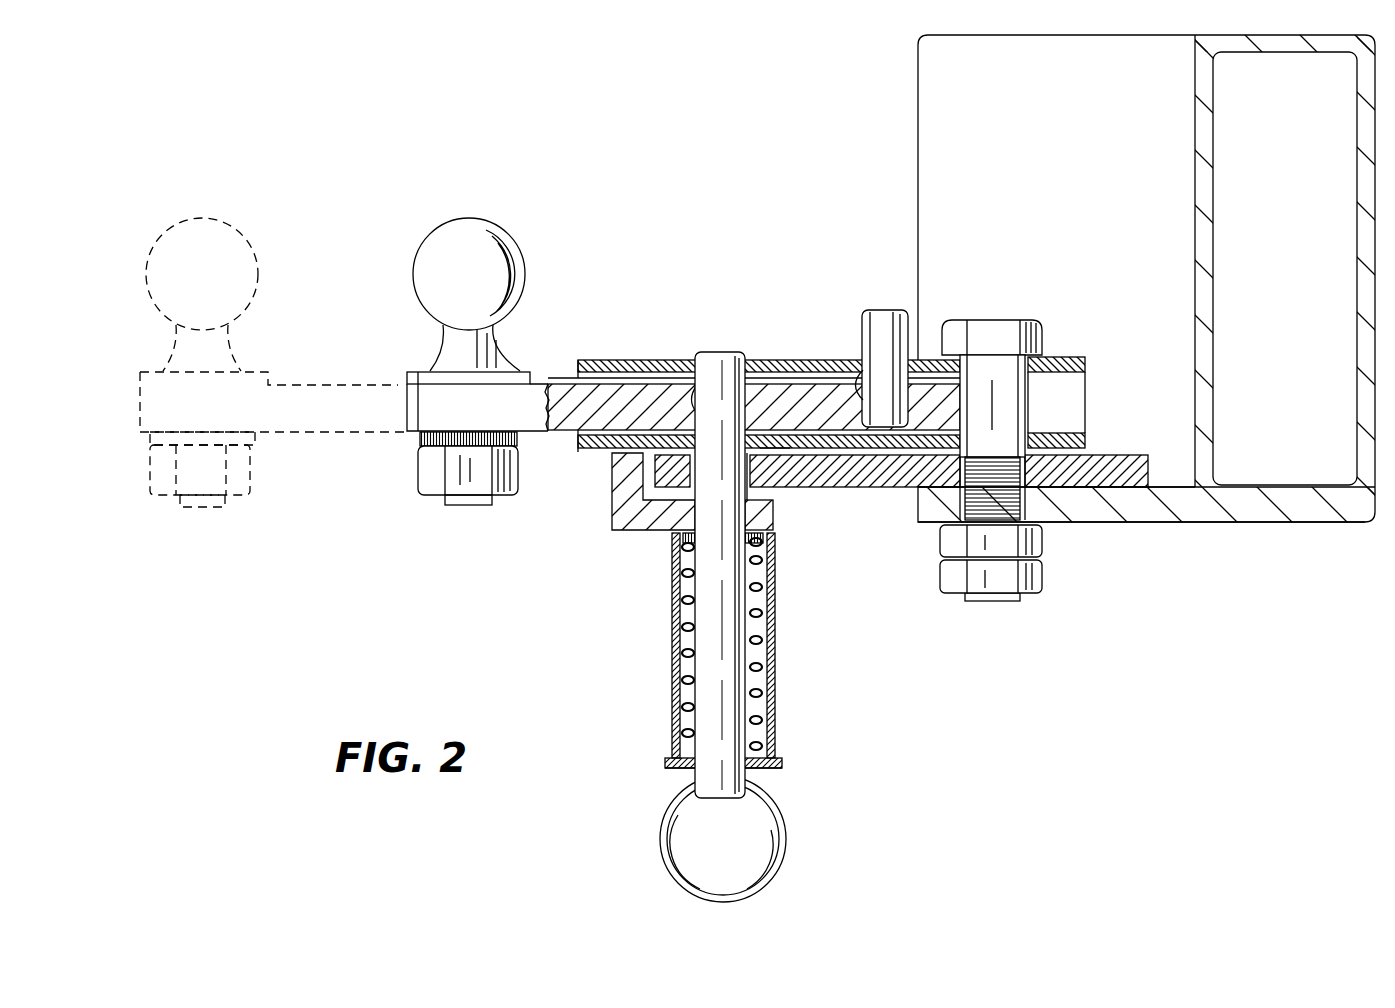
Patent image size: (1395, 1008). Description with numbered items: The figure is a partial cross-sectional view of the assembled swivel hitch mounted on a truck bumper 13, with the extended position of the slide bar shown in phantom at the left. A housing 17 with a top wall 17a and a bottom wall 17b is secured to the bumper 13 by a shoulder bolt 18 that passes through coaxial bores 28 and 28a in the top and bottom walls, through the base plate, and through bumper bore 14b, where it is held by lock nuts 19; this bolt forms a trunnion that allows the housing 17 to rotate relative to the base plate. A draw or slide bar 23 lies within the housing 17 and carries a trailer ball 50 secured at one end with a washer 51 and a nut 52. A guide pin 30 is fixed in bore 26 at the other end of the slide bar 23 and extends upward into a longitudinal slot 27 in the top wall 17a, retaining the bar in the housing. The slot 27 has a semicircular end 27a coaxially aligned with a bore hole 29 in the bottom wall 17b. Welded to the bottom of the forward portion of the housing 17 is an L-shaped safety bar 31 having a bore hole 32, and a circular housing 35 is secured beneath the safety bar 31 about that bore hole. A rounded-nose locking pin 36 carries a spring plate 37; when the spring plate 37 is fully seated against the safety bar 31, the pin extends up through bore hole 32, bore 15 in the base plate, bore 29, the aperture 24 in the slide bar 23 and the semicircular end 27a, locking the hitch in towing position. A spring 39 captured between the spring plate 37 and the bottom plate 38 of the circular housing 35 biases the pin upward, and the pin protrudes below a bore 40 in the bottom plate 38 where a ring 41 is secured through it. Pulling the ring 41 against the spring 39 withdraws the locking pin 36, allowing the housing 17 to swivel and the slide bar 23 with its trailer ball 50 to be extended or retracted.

The truck bumper 13 is at (1325, 512).
The bumper bore 14b is at (1015, 508).
The bore 15 is at (752, 490).
The housing 17 is at (612, 358).
The top wall 17a is at (580, 360).
The bottom wall 17b is at (578, 452).
The shoulder bolt 18 is at (992, 330).
The lock nuts 19 is at (1040, 578).
The slide bar 23 is at (546, 380).
The aperture 24 is at (700, 398).
The bore 26 is at (873, 380).
The longitudinal slot 27 is at (788, 365).
The semicircular end 27a is at (699, 368).
The bore 28 is at (1032, 372).
The bore 28a is at (1035, 443).
The bore hole 29 is at (770, 437).
The guide pin 30 is at (878, 330).
The safety bar 31 is at (612, 518).
The bore hole 32 is at (695, 532).
The circular housing 35 is at (770, 705).
The locking pin 36 is at (745, 355).
The spring plate 37 is at (773, 547).
The bottom plate 38 is at (776, 765).
The spring 39 is at (760, 651).
The bore 40 is at (765, 770).
The ring 41 is at (664, 833).
The trailer ball 50 is at (492, 240).
The washer 51 is at (417, 440).
The nut 52 is at (433, 486).